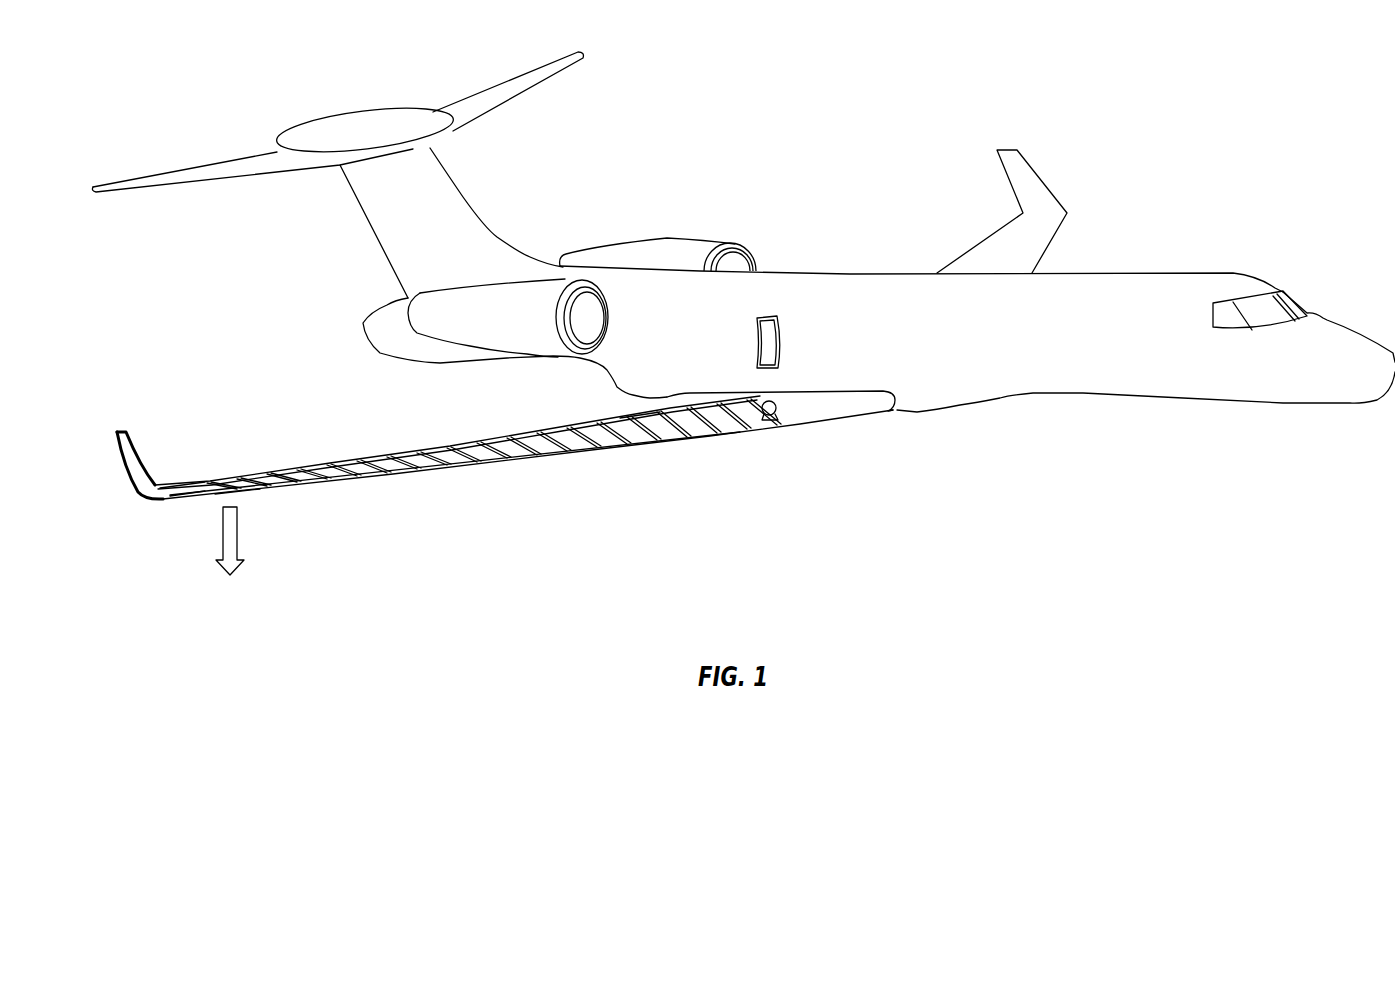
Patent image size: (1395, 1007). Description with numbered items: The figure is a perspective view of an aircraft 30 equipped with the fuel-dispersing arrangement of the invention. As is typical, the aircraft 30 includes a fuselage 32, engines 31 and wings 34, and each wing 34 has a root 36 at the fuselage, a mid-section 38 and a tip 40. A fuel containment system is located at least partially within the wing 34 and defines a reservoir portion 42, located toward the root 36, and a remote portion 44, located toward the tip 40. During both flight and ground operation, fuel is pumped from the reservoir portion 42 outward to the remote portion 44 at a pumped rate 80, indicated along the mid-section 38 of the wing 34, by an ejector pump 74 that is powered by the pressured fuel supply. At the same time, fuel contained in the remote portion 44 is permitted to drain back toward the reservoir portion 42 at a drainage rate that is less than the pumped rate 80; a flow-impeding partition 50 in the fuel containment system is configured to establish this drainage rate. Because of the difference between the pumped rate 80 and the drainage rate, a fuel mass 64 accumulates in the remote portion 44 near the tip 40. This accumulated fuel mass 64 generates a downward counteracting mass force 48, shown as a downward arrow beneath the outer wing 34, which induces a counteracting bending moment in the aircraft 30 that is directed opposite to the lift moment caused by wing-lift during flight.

The aircraft 30 is at (1212, 147).
The engines 31 is at (686, 234).
The fuselage 32 is at (860, 276).
The wings 34 is at (989, 238).
The root 36 is at (807, 430).
The mid-section 38 is at (443, 444).
The tip 40 is at (138, 493).
The reservoir portion 42 is at (632, 422).
The remote portion 44 is at (172, 487).
The downward counteracting mass force 48 is at (229, 557).
The flow-impeding partition 50 is at (240, 495).
The fuel mass 64 is at (190, 492).
The ejector pump 74 is at (772, 421).
The pumped rate 80 is at (298, 467).